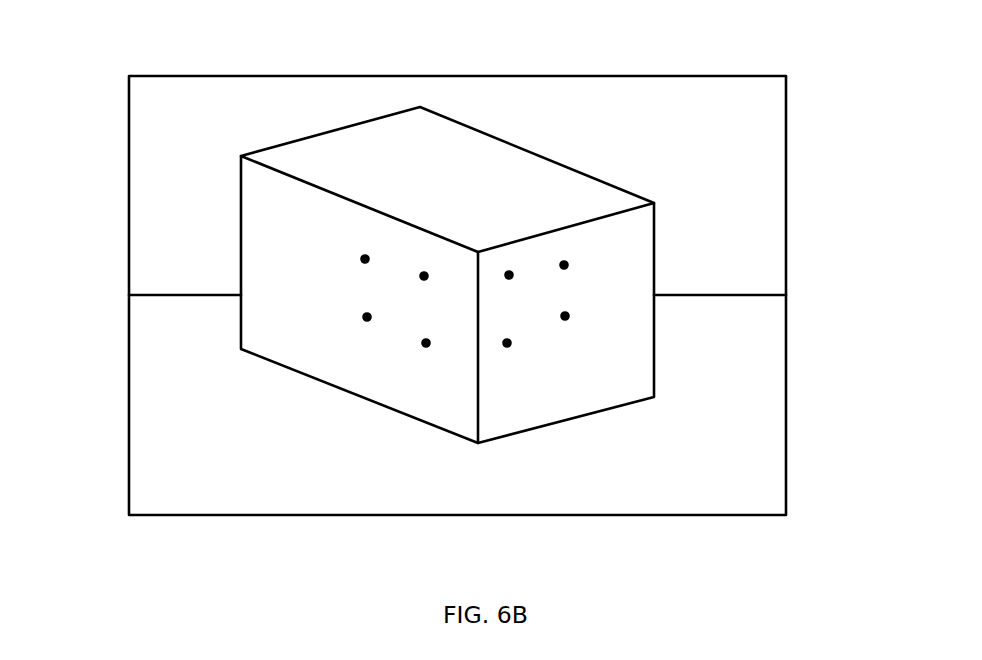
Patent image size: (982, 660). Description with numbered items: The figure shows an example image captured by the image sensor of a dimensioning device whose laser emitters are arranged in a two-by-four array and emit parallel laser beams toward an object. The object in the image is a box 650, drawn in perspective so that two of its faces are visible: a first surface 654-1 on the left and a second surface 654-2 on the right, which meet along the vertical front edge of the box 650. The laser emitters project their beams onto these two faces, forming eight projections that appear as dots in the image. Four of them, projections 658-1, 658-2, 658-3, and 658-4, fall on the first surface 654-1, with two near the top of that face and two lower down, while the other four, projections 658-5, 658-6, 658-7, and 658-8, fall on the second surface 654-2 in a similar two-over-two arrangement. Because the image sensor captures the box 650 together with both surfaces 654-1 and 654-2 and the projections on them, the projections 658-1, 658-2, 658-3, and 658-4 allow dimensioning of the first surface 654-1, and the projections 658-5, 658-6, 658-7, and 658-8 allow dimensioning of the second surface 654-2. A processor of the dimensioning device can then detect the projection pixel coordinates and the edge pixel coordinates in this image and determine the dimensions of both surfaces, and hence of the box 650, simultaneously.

The box 650 is at (241, 243).
The first surface 654-1 is at (280, 336).
The second surface 654-2 is at (645, 336).
The projection 658-1 is at (365, 259).
The projection 658-2 is at (424, 276).
The projection 658-3 is at (367, 317).
The projection 658-4 is at (426, 343).
The projection 658-5 is at (509, 275).
The projection 658-6 is at (564, 265).
The projection 658-7 is at (507, 343).
The projection 658-8 is at (565, 316).